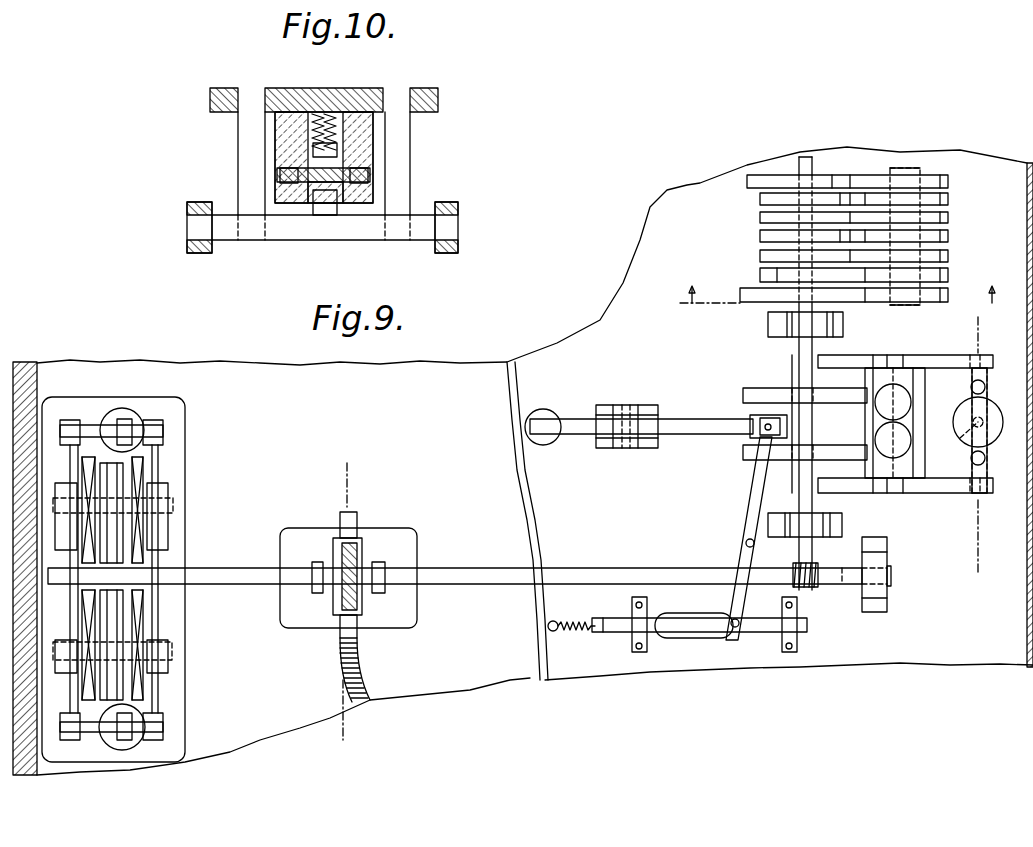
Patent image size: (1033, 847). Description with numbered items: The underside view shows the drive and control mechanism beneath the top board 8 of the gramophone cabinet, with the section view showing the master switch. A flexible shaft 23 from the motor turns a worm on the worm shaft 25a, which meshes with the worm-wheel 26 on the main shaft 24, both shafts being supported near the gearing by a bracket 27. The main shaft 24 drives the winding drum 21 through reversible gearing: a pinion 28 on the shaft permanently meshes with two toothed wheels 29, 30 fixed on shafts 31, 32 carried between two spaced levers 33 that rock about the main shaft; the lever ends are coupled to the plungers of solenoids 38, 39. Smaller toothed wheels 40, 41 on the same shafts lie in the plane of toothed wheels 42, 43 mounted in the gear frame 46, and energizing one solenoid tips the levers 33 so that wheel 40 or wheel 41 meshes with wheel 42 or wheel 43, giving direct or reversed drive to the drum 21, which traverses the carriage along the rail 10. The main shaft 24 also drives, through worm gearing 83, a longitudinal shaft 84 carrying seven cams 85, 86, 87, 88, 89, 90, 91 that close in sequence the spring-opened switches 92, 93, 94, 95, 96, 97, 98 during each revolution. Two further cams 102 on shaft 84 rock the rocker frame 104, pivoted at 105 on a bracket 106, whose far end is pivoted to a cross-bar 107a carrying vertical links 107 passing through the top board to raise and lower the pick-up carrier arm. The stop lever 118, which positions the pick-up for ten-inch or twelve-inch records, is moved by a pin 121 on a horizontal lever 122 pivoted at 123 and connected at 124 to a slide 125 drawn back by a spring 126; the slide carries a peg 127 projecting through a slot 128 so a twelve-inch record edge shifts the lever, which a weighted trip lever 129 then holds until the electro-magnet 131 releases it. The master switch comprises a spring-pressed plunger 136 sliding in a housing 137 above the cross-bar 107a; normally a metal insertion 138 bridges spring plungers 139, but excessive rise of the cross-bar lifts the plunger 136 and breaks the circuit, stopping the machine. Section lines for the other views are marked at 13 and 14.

In FIG. 10, the top board 8 is at (288, 97).
In FIG. 9, the top board 8 is at (477, 377).
In FIG. 9, the rail 10 is at (999, 445).
In FIG. 9, the section line 13 is at (344, 605).
In FIG. 9, the section line 14 is at (845, 284).
In FIG. 9, the winding drum 21 is at (115, 520).
In FIG. 9, the flexible shaft 23 is at (358, 666).
In FIG. 9, the main shaft 24 is at (580, 567).
In FIG. 9, the worm shaft 25a is at (357, 528).
In FIG. 9, the worm-wheel 26 is at (352, 560).
In FIG. 9, the bracket 27 is at (363, 597).
In FIG. 9, the pinion 28 is at (84, 606).
In FIG. 9, the toothed wheel 29 is at (88, 437).
In FIG. 9, the toothed wheel 30 is at (82, 697).
In FIG. 9, the shaft 31 is at (108, 498).
In FIG. 9, the shaft 32 is at (117, 660).
In FIG. 9, the lever 33 is at (78, 630).
In FIG. 9, the solenoid 38 is at (127, 405).
In FIG. 9, the solenoid 39 is at (140, 740).
In FIG. 9, the smaller toothed wheel 40 is at (145, 489).
In FIG. 9, the smaller toothed wheel 41 is at (144, 677).
In FIG. 9, the toothed wheel 42 is at (143, 541).
In FIG. 9, the toothed wheel 43 is at (137, 610).
In FIG. 9, the gear frame 46 is at (163, 561).
In FIG. 9, the worm gearing 83 is at (815, 589).
In FIG. 9, the longitudinal shaft 84 is at (805, 350).
In FIG. 9, the cam 85 is at (757, 303).
In FIG. 9, the cam 86 is at (762, 276).
In FIG. 9, the cam 87 is at (762, 256).
In FIG. 9, the cam 88 is at (762, 236).
In FIG. 9, the cam 89 is at (762, 218).
In FIG. 9, the cam 90 is at (762, 199).
In FIG. 9, the cam 91 is at (747, 175).
In FIG. 9, the switch 92 is at (935, 295).
In FIG. 9, the switch 93 is at (945, 258).
In FIG. 9, the switch 94 is at (945, 236).
In FIG. 9, the switch 95 is at (945, 218).
In FIG. 9, the switch 96 is at (946, 200).
In FIG. 9, the switch 97 is at (946, 183).
In FIG. 9, the switch 98 is at (951, 175).
In FIG. 9, the cam 102 is at (757, 389).
In FIG. 10, the rocker frame 104 is at (194, 244).
In FIG. 9, the rocker frame 104 is at (940, 358).
In FIG. 9, the pivot 105 is at (870, 490).
In FIG. 9, the bracket 106 is at (906, 490).
In FIG. 10, the vertical link 107 is at (246, 127).
In FIG. 9, the vertical link 107 is at (983, 380).
In FIG. 10, the cross-bar 107a is at (297, 231).
In FIG. 9, the cross-bar 107a is at (973, 395).
In FIG. 9, the stop lever 118 is at (750, 419).
In FIG. 9, the pin 121 is at (760, 437).
In FIG. 9, the horizontal lever 122 is at (761, 490).
In FIG. 9, the pivot 123 is at (747, 543).
In FIG. 9, the connection 124 is at (737, 617).
In FIG. 9, the slide 125 is at (690, 638).
In FIG. 9, the spring 126 is at (590, 608).
In FIG. 9, the peg 127 is at (675, 614).
In FIG. 9, the slot 128 is at (736, 632).
In FIG. 9, the trip lever 129 is at (580, 420).
In FIG. 9, the electro-magnet 131 is at (528, 417).
In FIG. 10, the master switch plunger 136 is at (329, 210).
In FIG. 9, the master switch plunger 136 is at (968, 437).
In FIG. 10, the housing 137 is at (283, 133).
In FIG. 9, the housing 137 is at (986, 418).
In FIG. 10, the metal insertion 138 is at (345, 195).
In FIG. 10, the spring plunger 139 is at (280, 176).